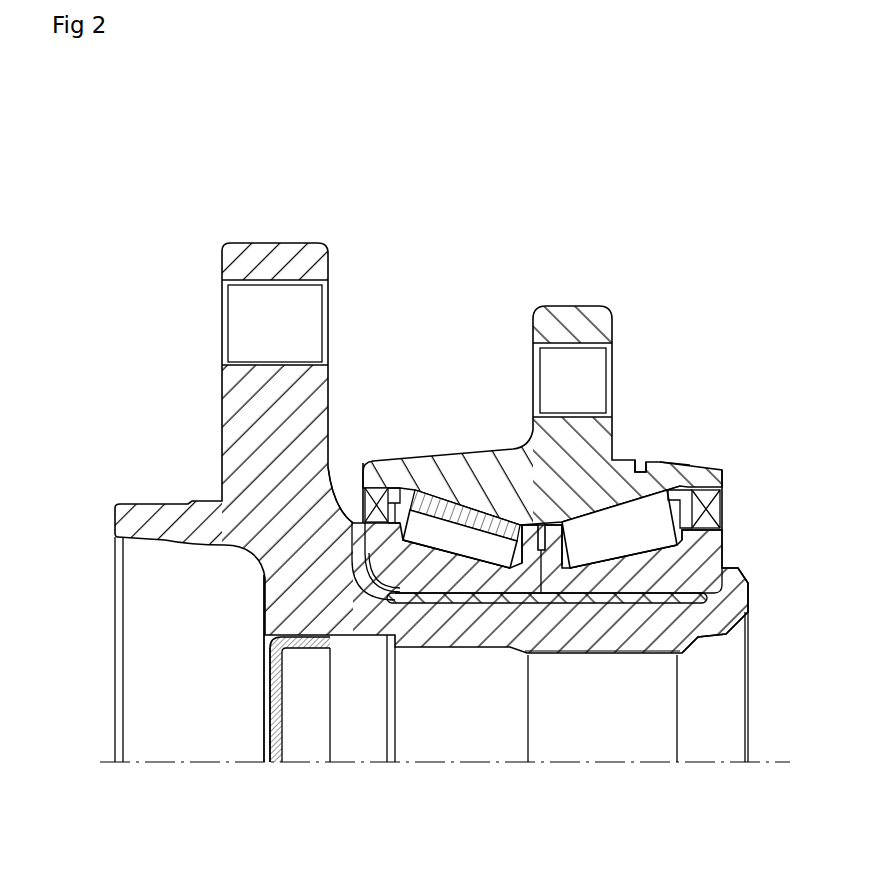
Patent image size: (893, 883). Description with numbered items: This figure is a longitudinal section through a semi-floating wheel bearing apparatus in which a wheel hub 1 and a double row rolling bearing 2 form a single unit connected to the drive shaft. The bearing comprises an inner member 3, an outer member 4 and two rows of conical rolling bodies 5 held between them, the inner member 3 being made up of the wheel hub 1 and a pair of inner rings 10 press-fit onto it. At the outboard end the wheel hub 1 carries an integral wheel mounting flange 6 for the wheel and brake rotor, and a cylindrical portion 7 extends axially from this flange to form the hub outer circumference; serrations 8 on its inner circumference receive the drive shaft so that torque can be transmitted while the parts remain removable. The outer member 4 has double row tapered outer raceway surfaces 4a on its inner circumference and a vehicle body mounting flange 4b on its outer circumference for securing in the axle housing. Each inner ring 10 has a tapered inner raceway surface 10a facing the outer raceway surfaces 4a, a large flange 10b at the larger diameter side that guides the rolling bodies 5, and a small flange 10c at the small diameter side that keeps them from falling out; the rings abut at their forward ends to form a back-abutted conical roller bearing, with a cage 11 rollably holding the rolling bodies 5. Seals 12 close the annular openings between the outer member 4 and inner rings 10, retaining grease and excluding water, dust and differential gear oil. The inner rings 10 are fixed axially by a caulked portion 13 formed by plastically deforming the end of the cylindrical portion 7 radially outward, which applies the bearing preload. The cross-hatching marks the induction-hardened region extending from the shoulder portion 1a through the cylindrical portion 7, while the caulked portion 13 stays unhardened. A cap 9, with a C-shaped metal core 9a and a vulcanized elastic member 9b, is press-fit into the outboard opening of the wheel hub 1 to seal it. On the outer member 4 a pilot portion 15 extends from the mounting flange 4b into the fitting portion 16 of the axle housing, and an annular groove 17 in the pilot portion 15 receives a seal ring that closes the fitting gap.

The wheel hub 1 is at (268, 562).
The shoulder portion 1a is at (358, 523).
The double row rolling bearing 2 is at (482, 400).
The inner member 3 is at (257, 636).
The outer member 4 is at (497, 465).
The outer raceway surface 4a is at (447, 505).
The vehicle body mounting flange 4b is at (580, 323).
The rolling body 5 is at (442, 543).
The wheel mounting flange 6 is at (258, 258).
The cylindrical portion 7 is at (718, 600).
The serrations 8 is at (613, 653).
The cap 9 is at (220, 808).
The metal core 9a is at (283, 695).
The elastic member 9b is at (273, 723).
The inner ring 10 is at (373, 637).
The inner raceway surface 10a is at (407, 562).
The large flange 10b is at (268, 608).
The small flange 10c is at (522, 553).
The cage 11 is at (408, 490).
The seal 12 is at (375, 493).
The caulked portion 13 is at (732, 585).
The pilot portion 15 is at (678, 465).
The fitting portion 16 is at (315, 652).
The annular groove 17 is at (642, 468).